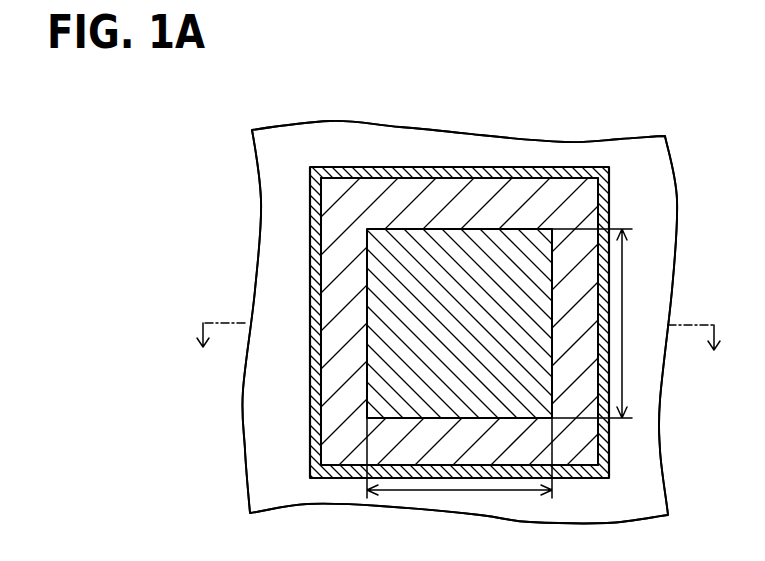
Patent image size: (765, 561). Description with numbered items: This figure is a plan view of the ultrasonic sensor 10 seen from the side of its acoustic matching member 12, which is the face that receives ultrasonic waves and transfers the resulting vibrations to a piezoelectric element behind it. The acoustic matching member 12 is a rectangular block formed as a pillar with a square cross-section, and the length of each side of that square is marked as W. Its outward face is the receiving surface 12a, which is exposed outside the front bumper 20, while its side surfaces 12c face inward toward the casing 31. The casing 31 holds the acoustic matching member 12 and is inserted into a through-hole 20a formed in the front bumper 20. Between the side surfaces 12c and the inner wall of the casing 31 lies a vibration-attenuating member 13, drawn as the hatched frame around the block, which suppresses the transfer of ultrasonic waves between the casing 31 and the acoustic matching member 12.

The ultrasonic sensor 10 is at (637, 121).
The front bumper 20 is at (565, 153).
The through-hole 20a is at (310, 427).
The casing 31 is at (309, 226).
The vibration-attenuating member 13 is at (583, 458).
The acoustic matching member 12 is at (460, 234).
The receiving surface 12a is at (459, 321).
The side surfaces 12c is at (366, 237).